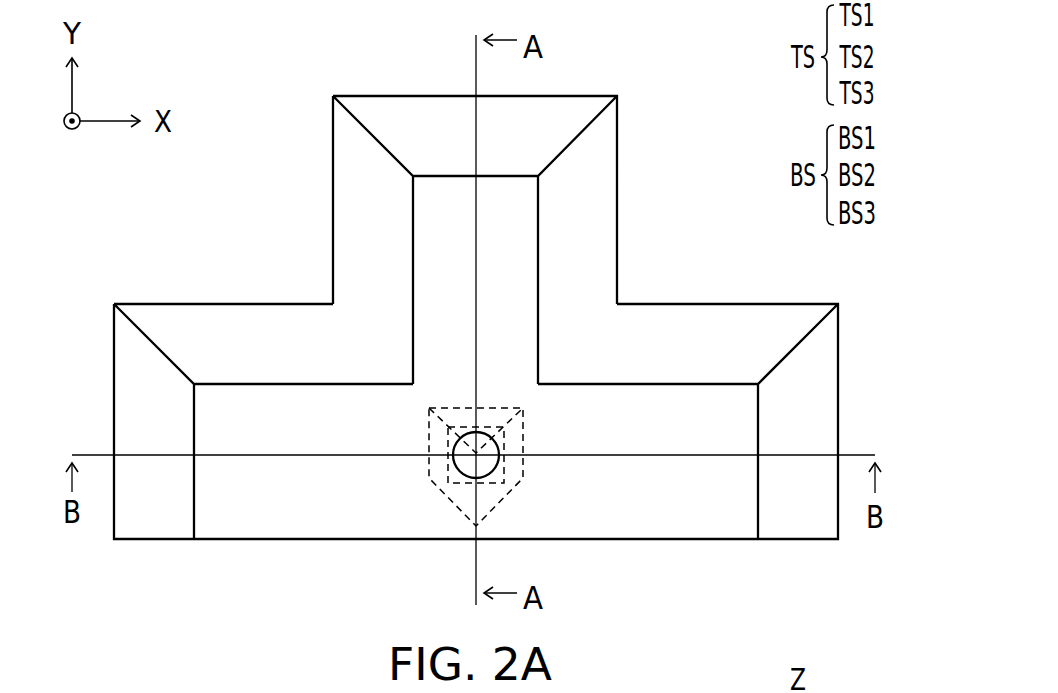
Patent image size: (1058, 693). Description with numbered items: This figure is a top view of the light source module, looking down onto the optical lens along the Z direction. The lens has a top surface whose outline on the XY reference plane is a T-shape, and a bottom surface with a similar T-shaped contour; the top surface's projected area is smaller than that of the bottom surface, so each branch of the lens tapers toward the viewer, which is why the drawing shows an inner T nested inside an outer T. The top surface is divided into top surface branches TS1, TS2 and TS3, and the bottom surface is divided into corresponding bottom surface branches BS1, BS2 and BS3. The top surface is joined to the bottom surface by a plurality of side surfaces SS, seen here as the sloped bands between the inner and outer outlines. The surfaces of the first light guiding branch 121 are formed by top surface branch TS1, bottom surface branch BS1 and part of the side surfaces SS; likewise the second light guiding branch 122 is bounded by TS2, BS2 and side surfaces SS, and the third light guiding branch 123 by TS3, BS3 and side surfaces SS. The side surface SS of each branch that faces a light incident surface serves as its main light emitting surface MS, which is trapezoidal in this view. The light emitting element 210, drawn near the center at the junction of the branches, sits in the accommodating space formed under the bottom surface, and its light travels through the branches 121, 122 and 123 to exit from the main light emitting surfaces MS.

The first light guiding branch 121 is at (427, 205).
The second light guiding branch 122 is at (695, 508).
The third light guiding branch 123 is at (357, 510).
The light emitting element 210 is at (491, 462).
The side surfaces SS is at (599, 160).
The main light emitting surface MS is at (417, 121).
The top surface branch TS1 is at (519, 267).
The top surface branch TS2 is at (652, 416).
The top surface branch TS3 is at (284, 479).
The bottom surface branch BS1 is at (563, 92).
The bottom surface branch BS2 is at (844, 378).
The bottom surface branch BS3 is at (109, 405).